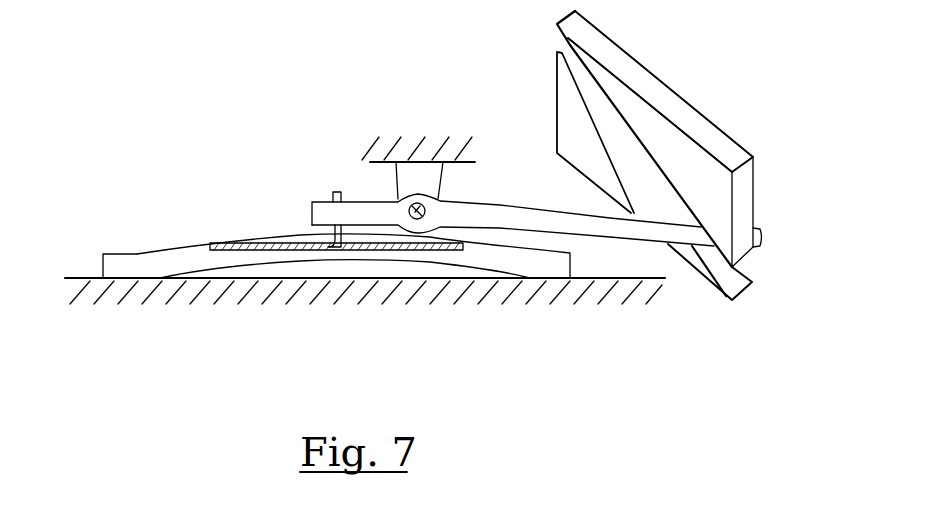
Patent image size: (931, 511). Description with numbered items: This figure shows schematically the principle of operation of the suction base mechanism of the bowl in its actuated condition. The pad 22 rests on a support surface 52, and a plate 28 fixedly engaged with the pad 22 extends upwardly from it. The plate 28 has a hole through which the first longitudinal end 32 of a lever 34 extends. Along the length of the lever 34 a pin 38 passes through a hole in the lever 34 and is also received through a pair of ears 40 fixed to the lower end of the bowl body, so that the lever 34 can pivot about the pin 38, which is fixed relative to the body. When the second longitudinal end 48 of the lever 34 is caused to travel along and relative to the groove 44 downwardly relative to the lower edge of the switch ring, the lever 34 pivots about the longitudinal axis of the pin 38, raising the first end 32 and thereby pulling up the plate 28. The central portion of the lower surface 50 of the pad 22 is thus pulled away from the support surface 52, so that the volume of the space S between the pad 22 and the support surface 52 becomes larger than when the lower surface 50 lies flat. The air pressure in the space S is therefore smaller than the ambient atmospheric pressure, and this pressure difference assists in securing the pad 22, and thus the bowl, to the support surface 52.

The pad 22 is at (152, 262).
The plate 28 is at (328, 193).
The first longitudinal end 32 is at (323, 218).
The lever 34 is at (593, 228).
The pin 38 is at (421, 212).
The ears 40 is at (410, 183).
The groove 44 is at (672, 223).
The second longitudinal end 48 is at (761, 235).
The lower surface 50 is at (262, 264).
The support surface 52 is at (82, 277).
The space S is at (372, 268).